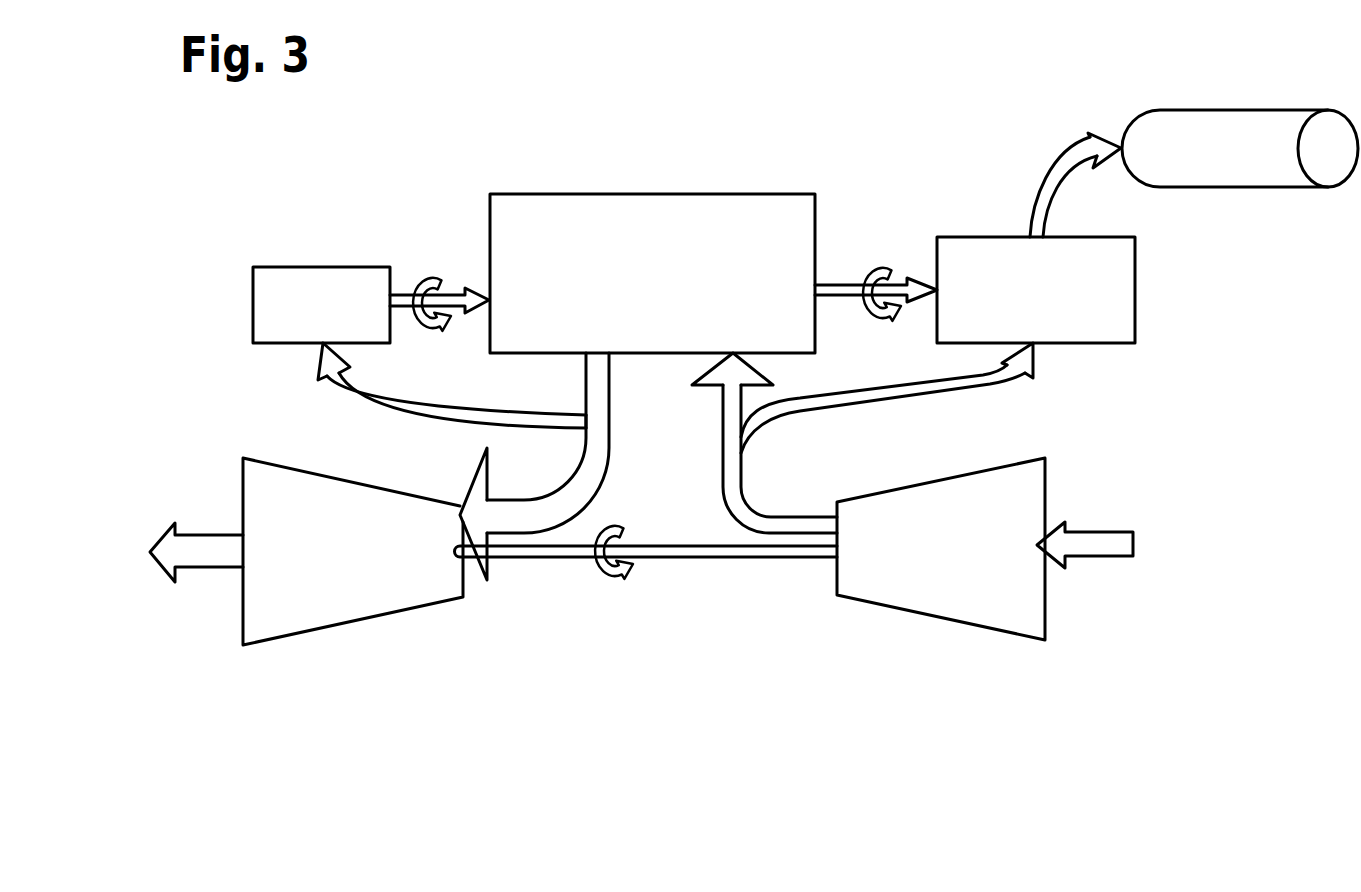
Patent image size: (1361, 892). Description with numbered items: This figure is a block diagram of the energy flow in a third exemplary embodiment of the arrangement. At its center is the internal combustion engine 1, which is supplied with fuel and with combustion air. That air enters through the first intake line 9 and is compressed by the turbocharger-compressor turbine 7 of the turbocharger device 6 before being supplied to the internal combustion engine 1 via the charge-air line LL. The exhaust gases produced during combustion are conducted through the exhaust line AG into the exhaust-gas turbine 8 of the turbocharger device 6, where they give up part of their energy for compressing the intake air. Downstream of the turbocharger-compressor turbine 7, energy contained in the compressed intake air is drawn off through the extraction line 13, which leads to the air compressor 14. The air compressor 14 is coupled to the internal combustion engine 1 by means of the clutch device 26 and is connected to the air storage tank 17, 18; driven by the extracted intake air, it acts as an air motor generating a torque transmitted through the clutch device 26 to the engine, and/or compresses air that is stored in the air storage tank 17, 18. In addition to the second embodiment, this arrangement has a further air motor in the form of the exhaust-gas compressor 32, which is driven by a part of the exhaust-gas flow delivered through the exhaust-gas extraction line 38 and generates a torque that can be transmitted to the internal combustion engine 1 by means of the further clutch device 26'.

The internal combustion engine 1 is at (580, 215).
The exhaust-gas compressor 32 is at (302, 277).
The further clutch device 26' is at (439, 280).
The clutch device 26 is at (876, 274).
The air compressor 14 is at (1093, 322).
The air storage tank 17 is at (1240, 113).
The air storage tank 18 is at (1237, 133).
The extraction line 13 is at (905, 402).
The charge-air line LL is at (725, 493).
The exhaust line AG is at (612, 430).
The exhaust-gas extraction line 38 is at (375, 408).
The turbocharger device 6 is at (667, 600).
The exhaust-gas turbine 8 is at (315, 628).
The turbocharger-compressor turbine 7 is at (938, 618).
The first intake line 9 is at (1127, 520).